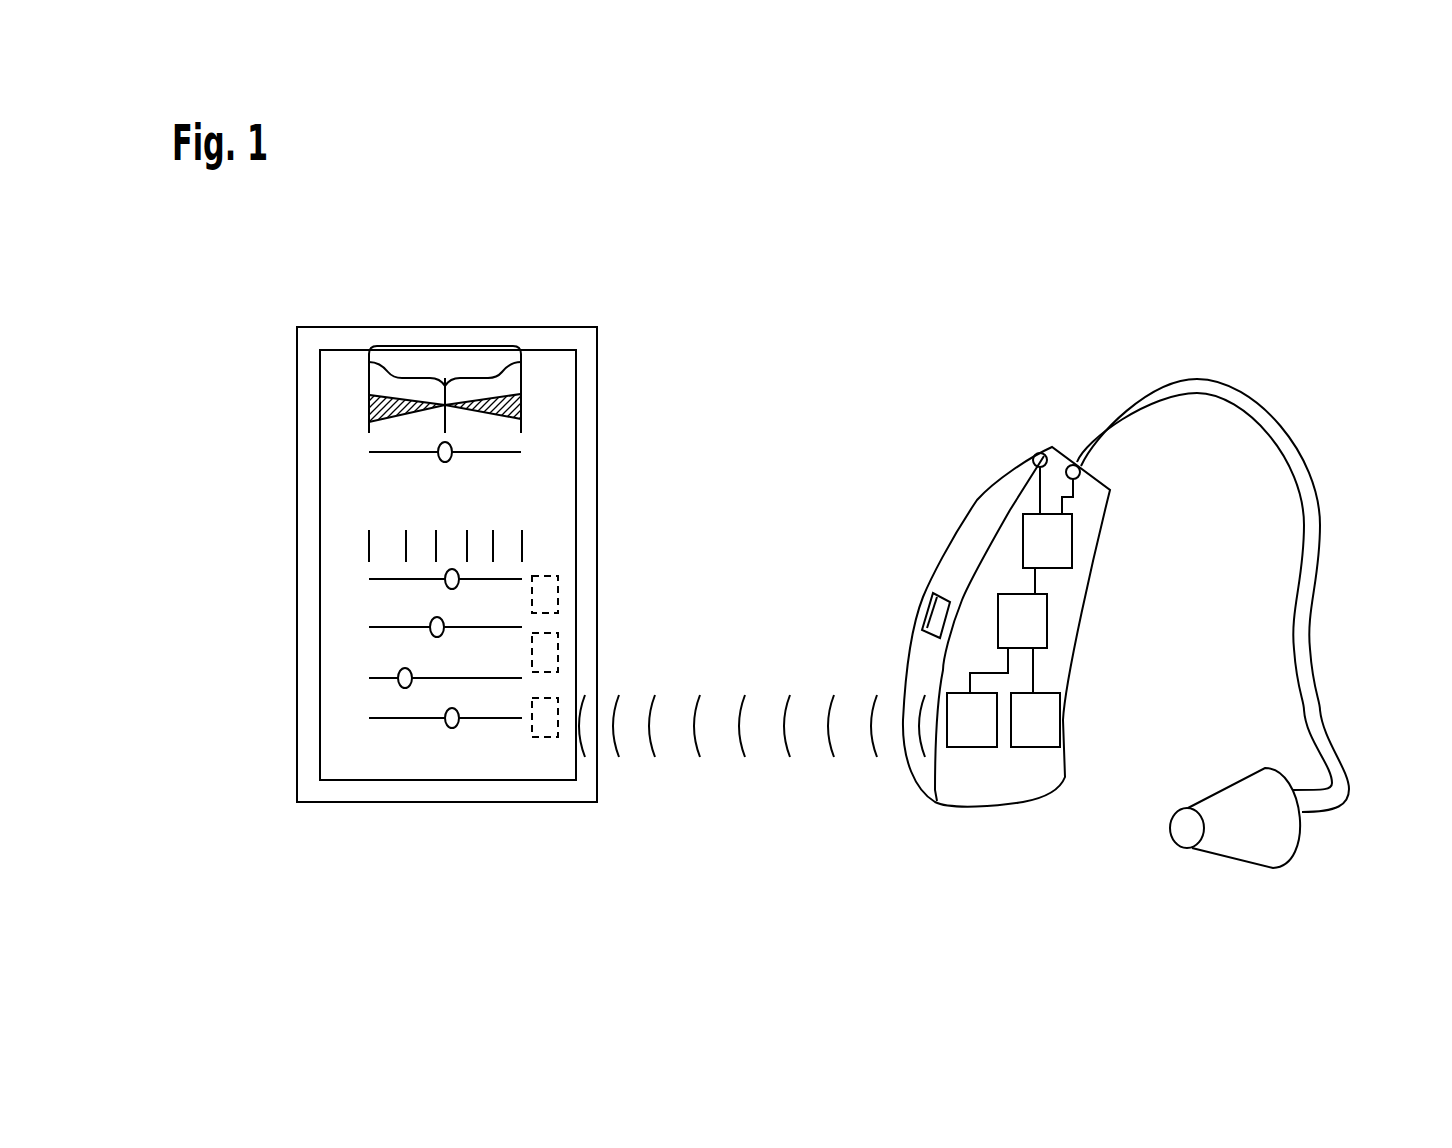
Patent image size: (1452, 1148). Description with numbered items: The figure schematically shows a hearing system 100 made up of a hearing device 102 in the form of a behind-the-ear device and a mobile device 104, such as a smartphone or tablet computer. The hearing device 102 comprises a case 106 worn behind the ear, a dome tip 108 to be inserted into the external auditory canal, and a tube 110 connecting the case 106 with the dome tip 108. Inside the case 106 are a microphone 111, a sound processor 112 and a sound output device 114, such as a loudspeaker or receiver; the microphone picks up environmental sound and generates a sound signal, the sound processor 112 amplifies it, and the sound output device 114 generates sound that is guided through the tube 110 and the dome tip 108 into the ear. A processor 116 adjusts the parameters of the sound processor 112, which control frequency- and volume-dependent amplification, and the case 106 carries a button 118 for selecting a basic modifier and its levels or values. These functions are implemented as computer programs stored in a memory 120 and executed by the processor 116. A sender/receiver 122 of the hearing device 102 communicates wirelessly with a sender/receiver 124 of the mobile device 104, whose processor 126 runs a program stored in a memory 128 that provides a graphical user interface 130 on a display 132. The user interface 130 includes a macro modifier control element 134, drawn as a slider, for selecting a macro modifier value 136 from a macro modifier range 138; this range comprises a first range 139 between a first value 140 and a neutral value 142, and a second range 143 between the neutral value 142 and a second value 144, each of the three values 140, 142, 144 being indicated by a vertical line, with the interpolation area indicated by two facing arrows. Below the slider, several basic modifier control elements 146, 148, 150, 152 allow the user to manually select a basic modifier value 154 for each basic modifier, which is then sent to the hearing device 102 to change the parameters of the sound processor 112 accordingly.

The hearing system 100 is at (250, 238).
The hearing device 102 is at (999, 405).
The mobile device 104 is at (550, 327).
The case 106 is at (975, 500).
The dome tip 108 is at (1303, 840).
The tube 110 is at (1321, 520).
The first microphone 111 is at (1041, 453).
The sound processor 112 is at (1072, 540).
The sound output device 114 is at (1080, 470).
The processor 116 is at (1047, 622).
The button 118 is at (928, 614).
The memory 120 is at (1060, 720).
The sender/receiver 122 is at (970, 748).
The sender/receiver 124 is at (550, 738).
The processor 126 is at (558, 652).
The memory 128 is at (558, 593).
The graphical user interface 130 is at (456, 509).
The display 132 is at (322, 372).
The macro modifier control element 134 is at (372, 452).
The macro modifier value 136 is at (369, 357).
The macro modifier range 138 is at (445, 345).
The first range 139 is at (385, 390).
The first value 140 is at (369, 422).
The neutral value 142 is at (443, 432).
The second range 143 is at (481, 345).
The second value 144 is at (523, 428).
The basic modifier control element 146 is at (372, 579).
The basic modifier control element 148 is at (372, 627).
The basic modifier control element 150 is at (372, 678).
The basic modifier control element 152 is at (372, 718).
The basic modifier value 154 is at (473, 519).